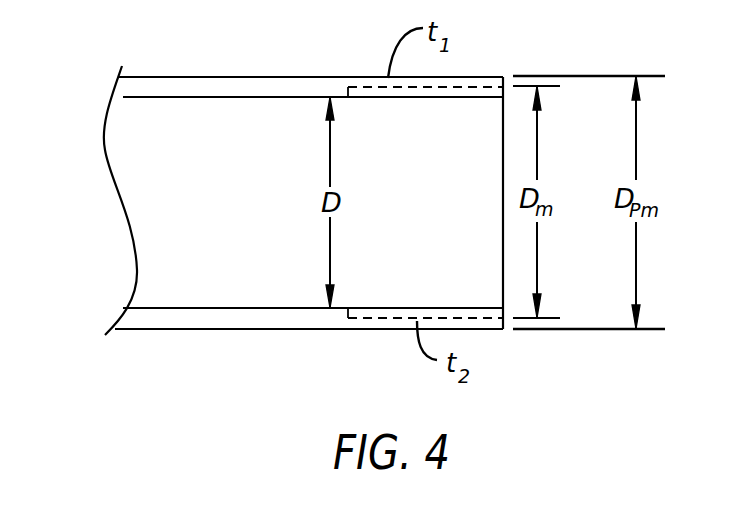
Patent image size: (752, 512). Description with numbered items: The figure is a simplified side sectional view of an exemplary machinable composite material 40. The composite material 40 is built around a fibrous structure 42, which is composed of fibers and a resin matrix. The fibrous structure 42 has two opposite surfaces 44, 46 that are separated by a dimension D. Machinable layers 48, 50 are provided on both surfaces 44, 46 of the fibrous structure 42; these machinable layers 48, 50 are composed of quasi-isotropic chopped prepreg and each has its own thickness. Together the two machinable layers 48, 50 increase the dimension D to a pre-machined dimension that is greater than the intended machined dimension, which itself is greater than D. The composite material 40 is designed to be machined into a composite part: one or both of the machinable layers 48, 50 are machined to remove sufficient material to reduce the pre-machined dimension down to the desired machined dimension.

The machinable composite material 40 is at (194, 360).
The fibrous structure 42 is at (141, 133).
The surface 44 is at (160, 98).
The surface 46 is at (153, 305).
The machinable layer 48 is at (203, 77).
The machinable layer 50 is at (228, 330).